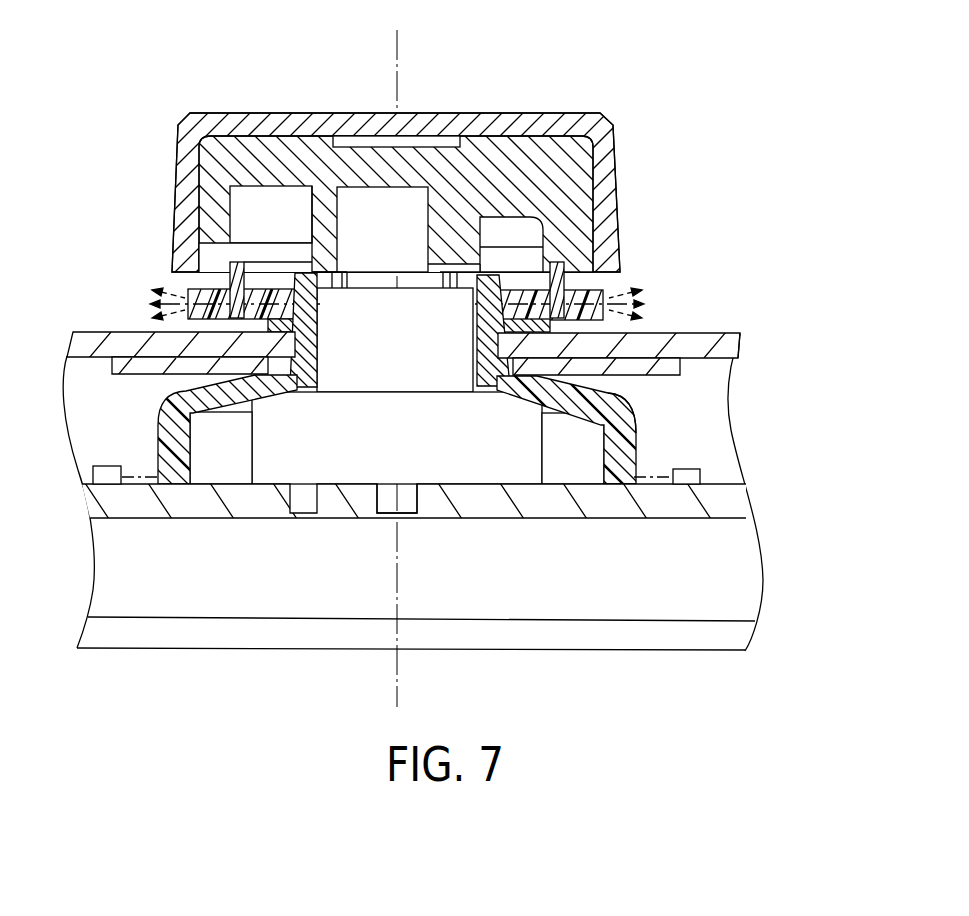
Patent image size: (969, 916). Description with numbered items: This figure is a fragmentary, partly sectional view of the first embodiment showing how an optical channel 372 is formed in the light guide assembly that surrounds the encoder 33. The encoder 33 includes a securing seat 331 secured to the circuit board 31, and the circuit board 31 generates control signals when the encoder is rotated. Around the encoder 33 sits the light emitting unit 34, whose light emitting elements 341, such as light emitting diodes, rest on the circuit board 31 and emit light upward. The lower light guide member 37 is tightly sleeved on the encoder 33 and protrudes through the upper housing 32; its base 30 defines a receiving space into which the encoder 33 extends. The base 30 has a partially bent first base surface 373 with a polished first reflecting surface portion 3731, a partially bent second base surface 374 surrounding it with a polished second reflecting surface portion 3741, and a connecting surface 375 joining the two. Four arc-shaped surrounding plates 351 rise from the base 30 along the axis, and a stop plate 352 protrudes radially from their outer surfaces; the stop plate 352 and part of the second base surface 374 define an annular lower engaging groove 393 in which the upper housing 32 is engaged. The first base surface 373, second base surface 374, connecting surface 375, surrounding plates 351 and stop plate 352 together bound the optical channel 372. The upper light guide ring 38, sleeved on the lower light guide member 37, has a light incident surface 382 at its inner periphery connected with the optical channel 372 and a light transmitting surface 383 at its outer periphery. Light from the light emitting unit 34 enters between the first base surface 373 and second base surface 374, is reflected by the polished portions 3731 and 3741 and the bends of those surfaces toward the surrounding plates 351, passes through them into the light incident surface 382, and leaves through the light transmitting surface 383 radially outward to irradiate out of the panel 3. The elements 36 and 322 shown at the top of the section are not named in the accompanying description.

The panel 3 is at (657, 80).
The cap 36 is at (545, 113).
The shaft 322 is at (411, 185).
The surrounding plates 351 is at (302, 272).
The light incident surface 382 is at (510, 296).
The light transmitting surface 383 is at (565, 295).
The upper light guide ring 38 is at (696, 197).
The second reflecting surface portion 3741 is at (660, 334).
The stop plate 352 is at (606, 304).
The second base surface 374 is at (677, 344).
The optical channel 372 is at (622, 406).
The lower light guide member 37 is at (792, 316).
The first reflecting surface portion 3731 is at (633, 425).
The first base surface 373 is at (618, 450).
The light emitting unit 34 is at (712, 469).
The light emitting elements 341 is at (105, 465).
The circuit board 31 is at (746, 521).
The connecting surface 375 is at (645, 485).
The securing seat 331 is at (543, 486).
The encoder 33 is at (252, 458).
The lower engaging groove 393 is at (316, 312).
The base 30 is at (146, 405).
The upper housing 32 is at (108, 343).